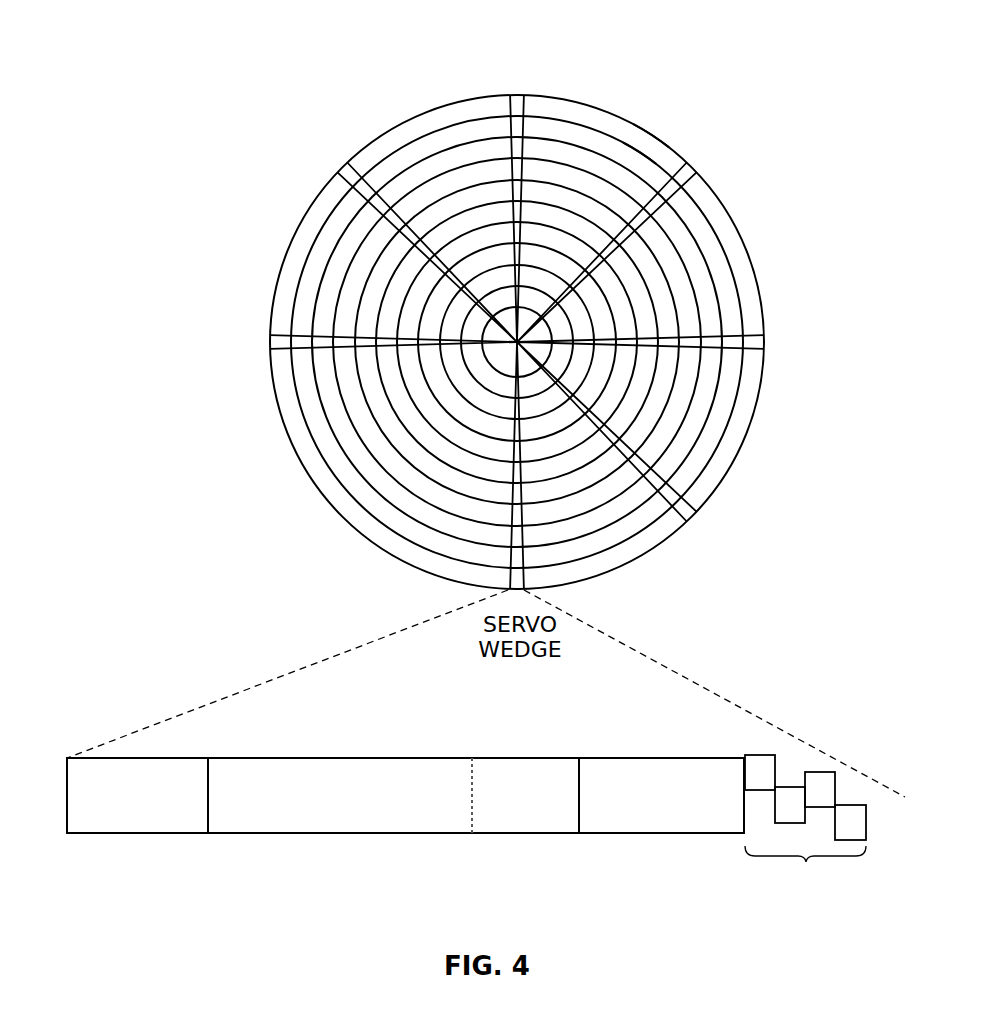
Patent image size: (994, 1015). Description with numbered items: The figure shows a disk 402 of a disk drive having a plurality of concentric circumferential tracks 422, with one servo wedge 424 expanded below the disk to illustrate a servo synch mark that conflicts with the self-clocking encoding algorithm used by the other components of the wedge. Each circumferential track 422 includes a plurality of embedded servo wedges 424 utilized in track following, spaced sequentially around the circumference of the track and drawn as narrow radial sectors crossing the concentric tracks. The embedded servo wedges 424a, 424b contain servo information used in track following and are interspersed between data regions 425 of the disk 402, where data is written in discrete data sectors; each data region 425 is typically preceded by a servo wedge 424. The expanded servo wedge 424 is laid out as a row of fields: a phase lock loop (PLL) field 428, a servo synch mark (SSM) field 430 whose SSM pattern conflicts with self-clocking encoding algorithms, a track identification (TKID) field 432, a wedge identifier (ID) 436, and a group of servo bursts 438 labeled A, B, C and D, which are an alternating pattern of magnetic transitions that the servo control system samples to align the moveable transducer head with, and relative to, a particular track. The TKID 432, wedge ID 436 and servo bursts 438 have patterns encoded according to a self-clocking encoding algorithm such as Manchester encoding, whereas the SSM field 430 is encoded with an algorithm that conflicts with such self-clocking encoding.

The disk 402 is at (355, 72).
The circumferential track 422 is at (306, 250).
The servo wedge 424 is at (517, 100).
The servo wedge 424a is at (349, 171).
The servo wedge 424b is at (272, 343).
The data region 425 is at (581, 136).
The phase lock loop (PLL) field 428 is at (130, 834).
The servo synch mark (SSM) field 430 is at (355, 834).
The track identification (TKID) field 432 is at (520, 834).
The wedge identifier (ID) 436 is at (672, 834).
The servo bursts 438 is at (748, 744).